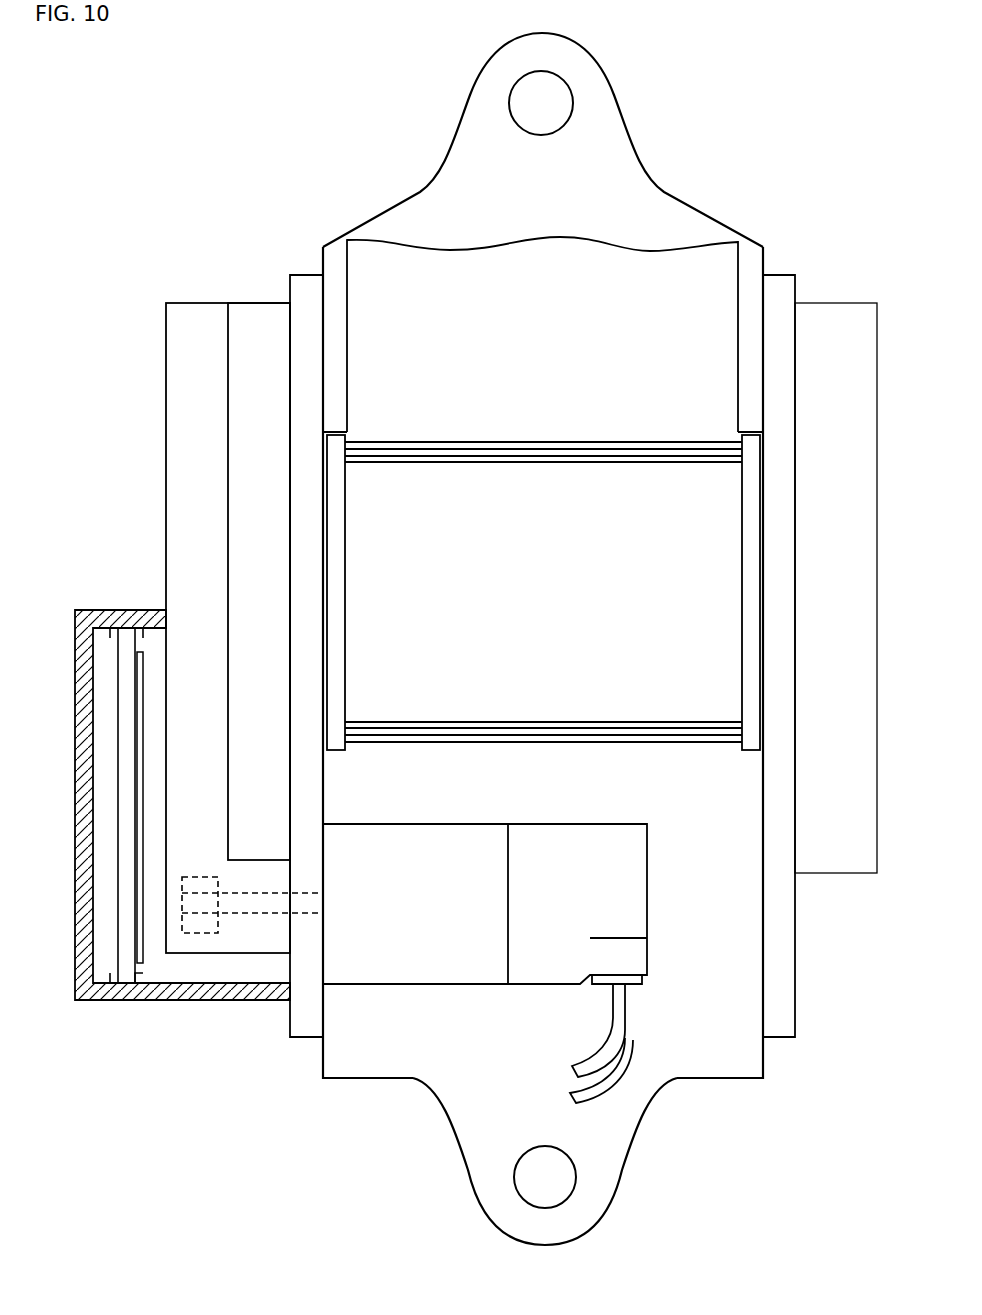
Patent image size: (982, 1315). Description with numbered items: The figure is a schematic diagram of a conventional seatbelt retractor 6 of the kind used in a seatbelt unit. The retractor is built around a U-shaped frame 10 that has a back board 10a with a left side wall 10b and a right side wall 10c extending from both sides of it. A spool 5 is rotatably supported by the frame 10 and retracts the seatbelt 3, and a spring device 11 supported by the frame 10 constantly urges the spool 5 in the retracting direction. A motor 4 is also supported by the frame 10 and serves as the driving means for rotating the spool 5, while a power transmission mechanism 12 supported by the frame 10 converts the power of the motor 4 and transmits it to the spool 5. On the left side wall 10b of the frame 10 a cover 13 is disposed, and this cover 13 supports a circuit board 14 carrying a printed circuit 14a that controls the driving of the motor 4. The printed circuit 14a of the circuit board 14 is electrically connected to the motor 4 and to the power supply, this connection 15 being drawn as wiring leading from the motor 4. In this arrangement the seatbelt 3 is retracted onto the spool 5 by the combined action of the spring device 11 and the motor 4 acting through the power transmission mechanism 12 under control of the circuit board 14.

The seatbelt 3 is at (590, 267).
The motor 4 is at (658, 932).
The spool 5 is at (556, 609).
The seatbelt retractor 6 is at (292, 235).
The frame 10 is at (668, 218).
The back board 10a is at (450, 1040).
The left side wall 10b is at (308, 998).
The right side wall 10c is at (790, 1000).
The spring device 11 is at (258, 312).
The power transmission mechanism 12 is at (195, 312).
The cover 13 is at (178, 990).
The circuit board 14 is at (126, 935).
The printed circuit 14a is at (138, 685).
The electrical connection 15 is at (596, 1037).